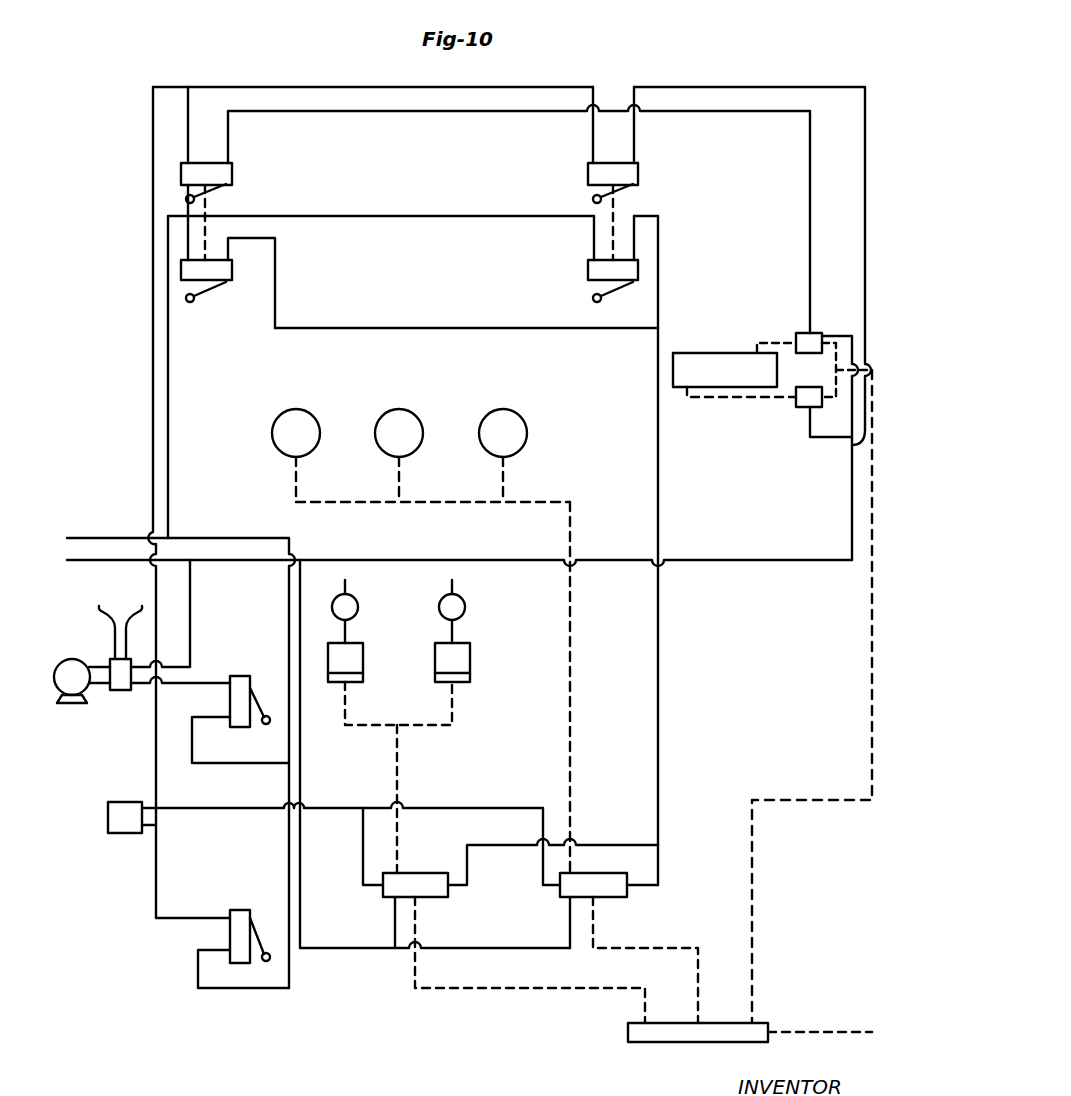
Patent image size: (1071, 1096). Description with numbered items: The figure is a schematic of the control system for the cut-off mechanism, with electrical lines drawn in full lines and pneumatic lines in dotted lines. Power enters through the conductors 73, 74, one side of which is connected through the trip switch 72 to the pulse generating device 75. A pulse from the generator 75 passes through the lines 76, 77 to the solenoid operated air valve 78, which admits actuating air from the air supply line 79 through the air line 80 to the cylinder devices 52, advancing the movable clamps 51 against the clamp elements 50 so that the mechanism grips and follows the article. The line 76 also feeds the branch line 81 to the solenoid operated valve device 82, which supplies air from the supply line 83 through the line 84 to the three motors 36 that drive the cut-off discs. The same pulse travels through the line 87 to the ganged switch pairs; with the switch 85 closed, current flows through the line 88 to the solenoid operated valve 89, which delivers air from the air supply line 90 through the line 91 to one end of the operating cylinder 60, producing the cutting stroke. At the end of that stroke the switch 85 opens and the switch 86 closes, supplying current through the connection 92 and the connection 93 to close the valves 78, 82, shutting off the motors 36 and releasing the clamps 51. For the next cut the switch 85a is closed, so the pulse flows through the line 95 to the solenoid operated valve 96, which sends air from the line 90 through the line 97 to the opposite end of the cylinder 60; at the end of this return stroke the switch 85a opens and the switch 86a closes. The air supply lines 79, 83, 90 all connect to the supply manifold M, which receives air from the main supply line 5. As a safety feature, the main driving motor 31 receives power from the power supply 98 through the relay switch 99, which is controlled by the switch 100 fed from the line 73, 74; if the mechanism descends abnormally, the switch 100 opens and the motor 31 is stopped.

The supply line 5 is at (806, 1032).
The main driving motor 31 is at (78, 659).
The motors 36 is at (298, 409).
The clamp elements 50 is at (443, 596).
The movable clamps 51 is at (442, 616).
The fluid pressure cylinder devices 52 is at (435, 660).
The operating cylinder 60 is at (727, 353).
The switch 72 is at (230, 929).
The conductor 73 is at (116, 538).
The conductor 74 is at (96, 560).
The pulse generating device 75 is at (122, 833).
The line 76 is at (211, 810).
The line 77 is at (363, 852).
The solenoid operated air valve 78 is at (428, 897).
The air supply line 79 is at (522, 988).
The air line 80 is at (399, 795).
The branch line 81 is at (543, 863).
The solenoid operated valve device 82 is at (628, 897).
The supply line 83 is at (672, 948).
The line 84 is at (580, 720).
The switch 85 is at (232, 175).
The switch 85a is at (588, 174).
The switch 86 is at (232, 246).
The switch 86a is at (588, 274).
The line 87 is at (154, 411).
The line 88 is at (438, 111).
The solenoid operated valve 89 is at (812, 333).
The air supply line 90 is at (872, 670).
The line 91 is at (789, 343).
The connection 92 is at (168, 393).
The connection 93 is at (483, 328).
The line 95 is at (769, 87).
The solenoid operated valve 96 is at (797, 407).
The line 97 is at (737, 397).
The power supply 98 is at (120, 624).
The relay switch 99 is at (118, 690).
The switch 100 is at (234, 676).
The supply manifold M is at (628, 1033).